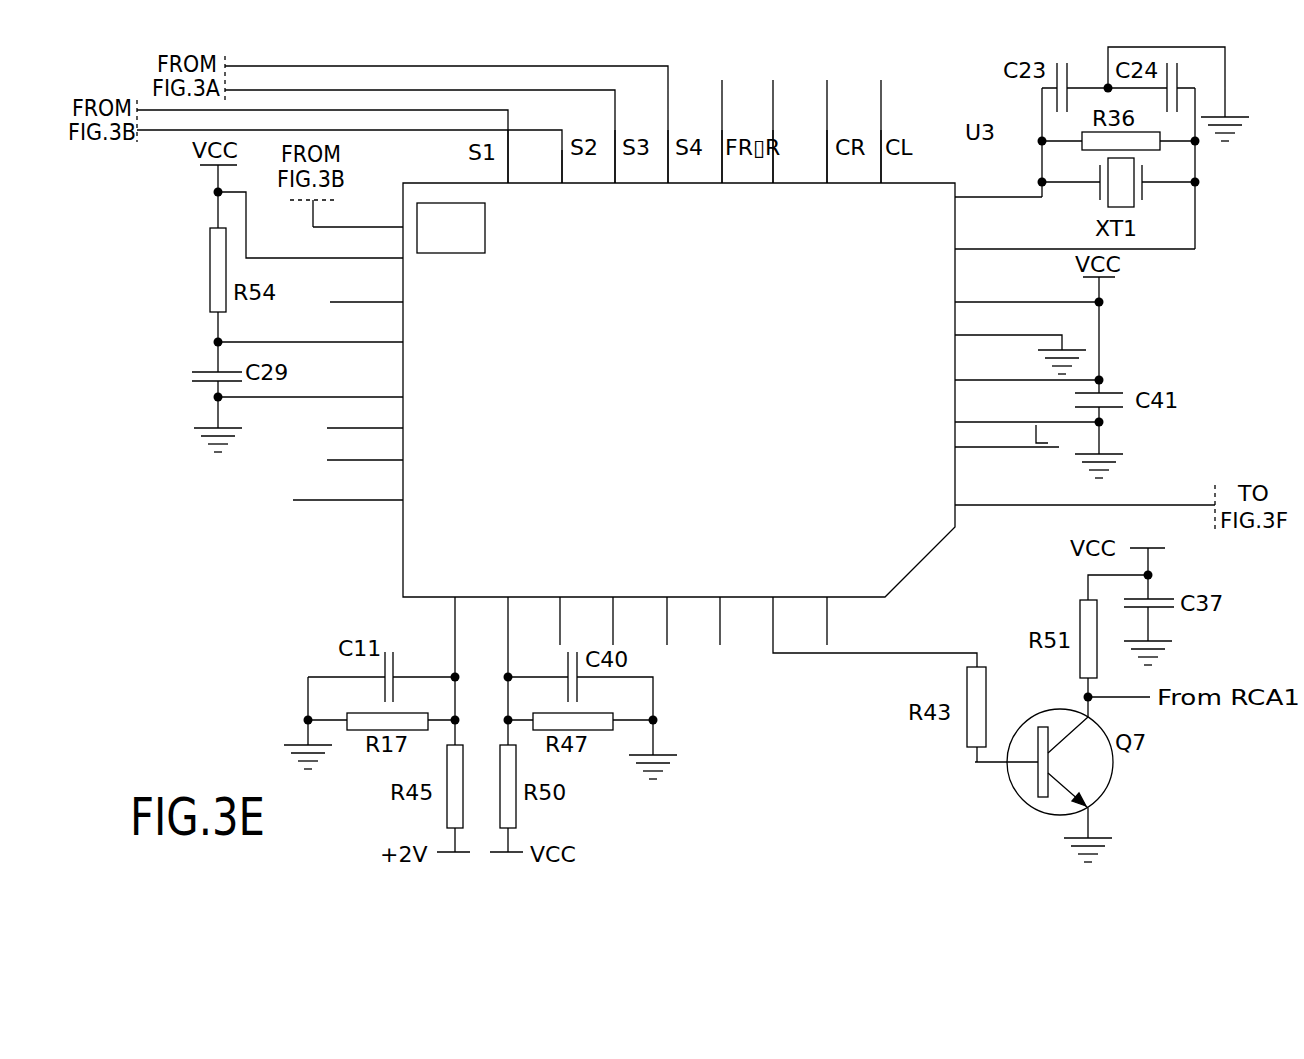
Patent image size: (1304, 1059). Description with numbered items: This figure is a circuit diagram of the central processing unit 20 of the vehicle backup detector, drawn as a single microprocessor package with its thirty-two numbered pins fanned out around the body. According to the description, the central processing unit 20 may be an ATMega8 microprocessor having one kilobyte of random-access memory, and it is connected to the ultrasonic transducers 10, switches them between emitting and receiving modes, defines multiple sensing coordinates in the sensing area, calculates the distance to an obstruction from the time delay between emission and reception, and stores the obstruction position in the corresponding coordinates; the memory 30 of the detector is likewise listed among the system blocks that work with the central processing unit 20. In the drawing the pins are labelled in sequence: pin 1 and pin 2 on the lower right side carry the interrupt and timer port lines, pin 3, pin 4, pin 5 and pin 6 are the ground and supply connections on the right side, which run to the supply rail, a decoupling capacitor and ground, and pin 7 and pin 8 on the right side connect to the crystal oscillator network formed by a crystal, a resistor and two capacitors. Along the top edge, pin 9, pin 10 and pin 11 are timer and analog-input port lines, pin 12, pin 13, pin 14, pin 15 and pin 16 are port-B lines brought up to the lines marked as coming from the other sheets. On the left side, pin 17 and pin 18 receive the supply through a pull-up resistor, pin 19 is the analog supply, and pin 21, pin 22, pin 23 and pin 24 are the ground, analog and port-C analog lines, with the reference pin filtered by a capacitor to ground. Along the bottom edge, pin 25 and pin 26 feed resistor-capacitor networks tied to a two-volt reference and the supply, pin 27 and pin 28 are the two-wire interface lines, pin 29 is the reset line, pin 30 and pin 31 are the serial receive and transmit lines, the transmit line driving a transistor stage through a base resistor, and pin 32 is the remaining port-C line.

The central processing unit 20 is at (716, 403).
The pin 1 (INT1)PD3 1 is at (1085, 482).
The pin 2 (XCD/T0)PD4 2 is at (1007, 434).
The pin 3 GND 3 is at (1027, 406).
The pin 4 VCC 4 is at (1027, 365).
The pin 5 GND 5 is at (1020, 341).
The pin 6 VCC 6 is at (1027, 287).
The pin 7 PB6 7 is at (1075, 234).
The pin 8 PB5 8 is at (998, 183).
The pin 9 (T1)PD5 9 is at (870, 156).
The ultrasonic transducers 10 is at (816, 156).
The pin 11 (AIN1)PD7 11 is at (762, 156).
The pin 12 (ICP)PB0 12 is at (711, 156).
The pin 13 (OC1A)PB1 13 is at (657, 156).
The pin 14 (SS/CC1B)PB2 14 is at (603, 156).
The pin 15 (SS/CC1B)PB3 15 is at (550, 166).
The pin 16 (MOSI/OC2)PB4 16 is at (497, 156).
The pin 17 PB5 17 is at (358, 213).
The pin 18 VCC 18 is at (310, 225).
The pin 19 ADCS 19 is at (366, 290).
The pin 21 GND 21 is at (310, 376).
The pin 22 ADC7 22 is at (365, 414).
The pin 23 PC0(ADC0) 23 is at (365, 448).
The pin 24 PC1(ADC1) 24 is at (348, 486).
The pin 25 PC2 25 is at (443, 637).
The pin 26 PC3 26 is at (496, 637).
The pin 27 PC4(ADCA/SDA) 27 is at (548, 621).
The pin 28 PC5(ADCS/SCL) 28 is at (601, 621).
The pin 29 PC6(RESET) 29 is at (655, 621).
The memory 30 is at (708, 621).
The pin 31 PC1(TXD) 31 is at (863, 632).
The pin 32 PC2 32 is at (815, 621).